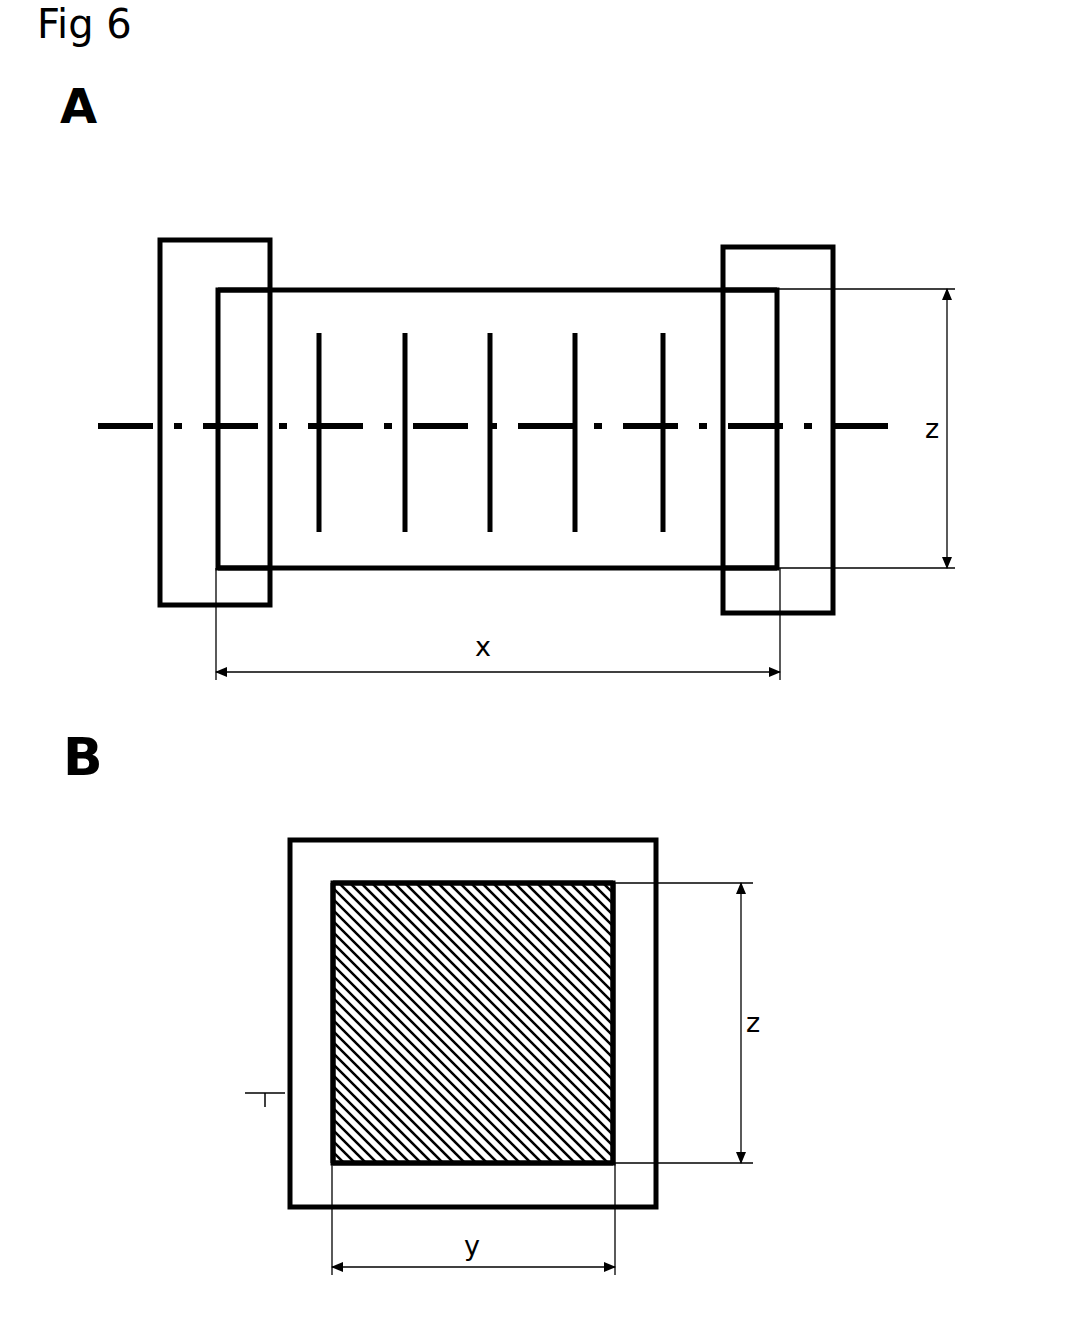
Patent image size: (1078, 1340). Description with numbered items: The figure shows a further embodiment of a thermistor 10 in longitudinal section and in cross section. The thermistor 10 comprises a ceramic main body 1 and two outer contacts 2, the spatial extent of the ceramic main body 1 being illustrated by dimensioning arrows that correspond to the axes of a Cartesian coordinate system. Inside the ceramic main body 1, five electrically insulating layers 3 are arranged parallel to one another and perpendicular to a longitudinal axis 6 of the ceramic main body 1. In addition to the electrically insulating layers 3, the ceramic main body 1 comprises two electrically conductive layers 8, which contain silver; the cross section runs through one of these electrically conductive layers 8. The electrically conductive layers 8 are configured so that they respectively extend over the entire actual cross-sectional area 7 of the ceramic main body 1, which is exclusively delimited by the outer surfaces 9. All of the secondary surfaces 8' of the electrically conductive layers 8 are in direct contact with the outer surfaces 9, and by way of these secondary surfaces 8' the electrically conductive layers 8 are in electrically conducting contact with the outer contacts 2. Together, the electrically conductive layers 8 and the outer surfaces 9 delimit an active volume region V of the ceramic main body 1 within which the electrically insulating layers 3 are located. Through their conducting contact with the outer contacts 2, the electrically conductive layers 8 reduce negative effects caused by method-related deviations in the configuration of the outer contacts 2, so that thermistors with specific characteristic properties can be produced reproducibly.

In FIG. 6A, the ceramic main body 1 is at (752, 317).
In FIG. 6B, the ceramic main body 1 is at (522, 883).
In FIG. 6A, the outer contacts 2 is at (197, 397).
In FIG. 6B, the outer contacts 2 is at (313, 995).
In FIG. 6A, the electrically insulating layers 3 is at (662, 397).
In FIG. 6A, the longitudinal axis 6 is at (142, 433).
In FIG. 6B, the longitudinal axis 6 is at (476, 1028).
In FIG. 6B, the actual cross-sectional area 7 is at (265, 1118).
In FIG. 6A, the electrically conductive layers 8 is at (497, 593).
In FIG. 6B, the electrically conductive layers 8 is at (313, 1022).
In FIG. 6A, the secondary surfaces 8' is at (497, 265).
In FIG. 6B, the outer surfaces 9 is at (357, 883).
In FIG. 6A, the thermistor 10 is at (303, 190).
In FIG. 6A, the active volume region V is at (378, 310).